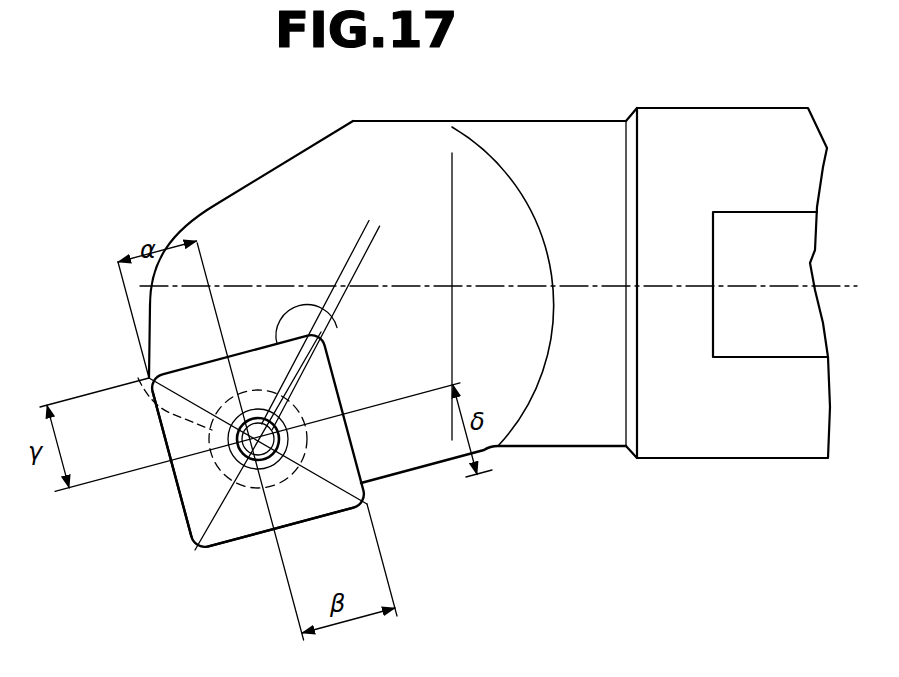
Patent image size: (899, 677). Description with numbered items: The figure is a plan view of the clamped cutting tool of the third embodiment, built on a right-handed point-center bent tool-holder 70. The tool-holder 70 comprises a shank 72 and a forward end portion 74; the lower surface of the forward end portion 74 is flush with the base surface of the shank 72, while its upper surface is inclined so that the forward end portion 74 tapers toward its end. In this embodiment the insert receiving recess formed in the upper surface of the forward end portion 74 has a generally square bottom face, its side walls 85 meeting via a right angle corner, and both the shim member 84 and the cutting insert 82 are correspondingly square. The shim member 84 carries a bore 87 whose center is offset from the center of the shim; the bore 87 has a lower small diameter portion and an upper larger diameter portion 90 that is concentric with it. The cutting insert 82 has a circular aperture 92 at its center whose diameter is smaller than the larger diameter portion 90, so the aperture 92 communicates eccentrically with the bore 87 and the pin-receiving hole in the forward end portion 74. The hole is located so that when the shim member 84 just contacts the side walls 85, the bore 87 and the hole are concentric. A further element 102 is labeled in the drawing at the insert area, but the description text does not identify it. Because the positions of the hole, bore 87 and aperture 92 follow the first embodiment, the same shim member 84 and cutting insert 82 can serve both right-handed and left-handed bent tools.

The tool-holder 70 is at (576, 117).
The shank 72 is at (684, 110).
The forward end portion 74 is at (283, 185).
The cutting insert 82 is at (231, 532).
The shim member 84 is at (195, 507).
The side walls 85 is at (250, 351).
The bore 87 is at (143, 377).
The upper larger diameter portion 90 is at (116, 377).
The aperture 92 is at (235, 460).
The clamp screw 102 is at (288, 452).